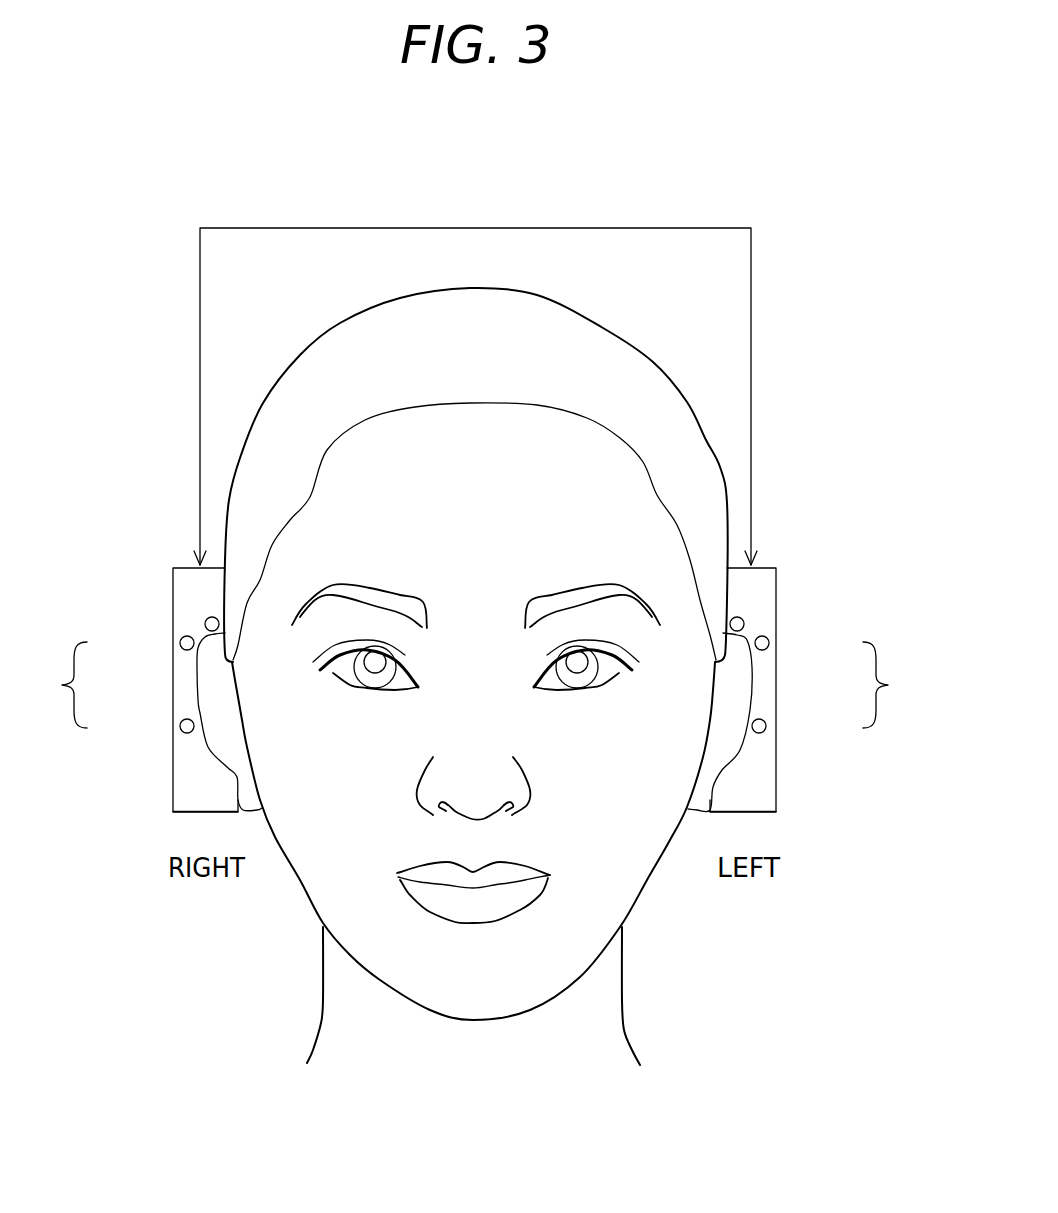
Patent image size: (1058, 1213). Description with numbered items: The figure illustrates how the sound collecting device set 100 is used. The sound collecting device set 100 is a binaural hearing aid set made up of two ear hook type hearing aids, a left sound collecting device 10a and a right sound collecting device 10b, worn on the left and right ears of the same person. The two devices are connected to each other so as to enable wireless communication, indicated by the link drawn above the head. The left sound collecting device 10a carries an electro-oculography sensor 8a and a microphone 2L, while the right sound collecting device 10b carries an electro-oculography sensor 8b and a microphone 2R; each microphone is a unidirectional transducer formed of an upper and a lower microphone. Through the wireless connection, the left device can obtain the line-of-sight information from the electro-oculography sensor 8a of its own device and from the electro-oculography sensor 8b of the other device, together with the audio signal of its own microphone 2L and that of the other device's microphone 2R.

The sound collecting device set 100 is at (668, 201).
The left sound collecting device 10a is at (784, 559).
The right sound collecting device 10b is at (163, 558).
The electro-oculography sensor 8a is at (742, 620).
The electro-oculography sensor 8b is at (206, 621).
The microphone 2R is at (52, 685).
The microphone 2L is at (896, 685).